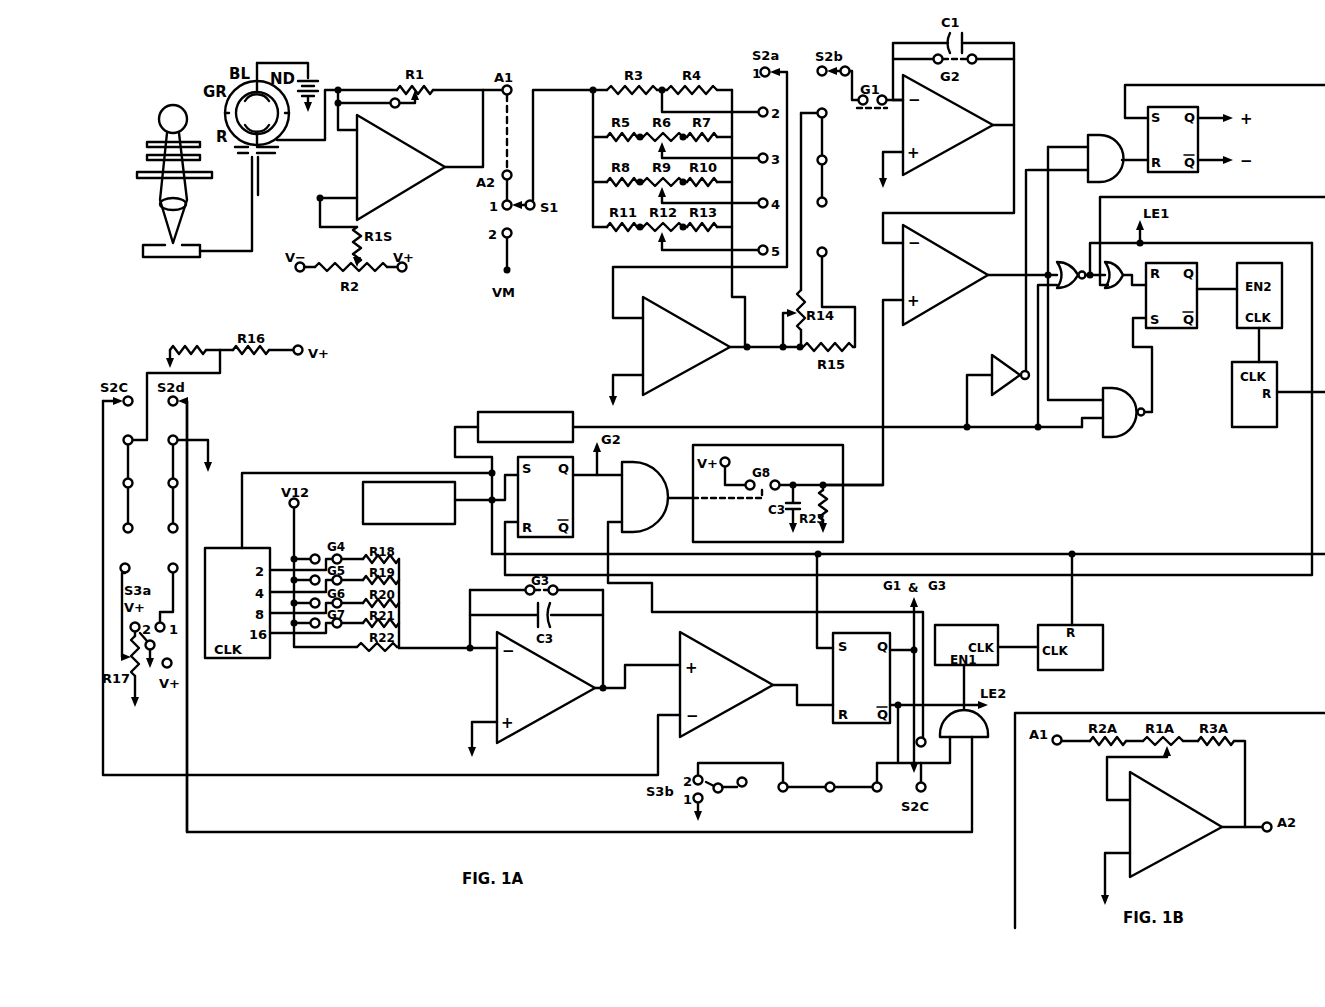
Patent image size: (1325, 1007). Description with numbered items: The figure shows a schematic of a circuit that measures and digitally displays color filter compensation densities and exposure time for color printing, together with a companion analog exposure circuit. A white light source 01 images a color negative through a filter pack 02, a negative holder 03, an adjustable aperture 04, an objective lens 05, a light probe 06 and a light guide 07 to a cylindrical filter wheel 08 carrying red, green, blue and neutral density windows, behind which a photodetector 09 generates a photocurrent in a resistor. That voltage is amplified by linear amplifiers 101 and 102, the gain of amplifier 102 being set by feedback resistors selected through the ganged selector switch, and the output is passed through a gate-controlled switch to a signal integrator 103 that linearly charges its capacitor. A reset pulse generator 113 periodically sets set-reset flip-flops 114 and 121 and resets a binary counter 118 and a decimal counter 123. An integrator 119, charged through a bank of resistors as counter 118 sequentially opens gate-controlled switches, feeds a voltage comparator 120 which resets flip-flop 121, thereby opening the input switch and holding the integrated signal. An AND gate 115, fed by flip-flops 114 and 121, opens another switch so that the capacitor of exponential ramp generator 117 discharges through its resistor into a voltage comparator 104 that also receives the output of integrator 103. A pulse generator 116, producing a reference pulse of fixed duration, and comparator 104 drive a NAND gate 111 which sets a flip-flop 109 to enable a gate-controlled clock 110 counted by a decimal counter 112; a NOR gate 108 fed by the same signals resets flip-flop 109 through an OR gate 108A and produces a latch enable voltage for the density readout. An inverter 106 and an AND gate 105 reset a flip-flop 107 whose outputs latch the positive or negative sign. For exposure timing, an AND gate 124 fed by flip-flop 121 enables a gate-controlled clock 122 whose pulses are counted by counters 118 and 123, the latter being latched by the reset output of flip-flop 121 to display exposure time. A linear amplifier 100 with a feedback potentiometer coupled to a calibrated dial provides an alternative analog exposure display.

In FIG. 1A, the white light source 01 is at (148, 119).
In FIG. 1A, the filter pack 02 is at (154, 145).
In FIG. 1A, the negative holder 03 is at (154, 159).
In FIG. 1A, the adjustable aperture 04 is at (160, 178).
In FIG. 1A, the objective lens 05 is at (148, 188).
In FIG. 1A, the light probe 06 is at (180, 209).
In FIG. 1A, the light guide 07 is at (258, 179).
In FIG. 1A, the cylindrical filter wheel 08 is at (307, 101).
In FIG. 1A, the photodetector 09 is at (257, 104).
In FIG. 1B, the linear amplifier 100 is at (1186, 838).
In FIG. 1A, the linear amplifier 101 is at (400, 158).
In FIG. 1A, the linear amplifier 102 is at (706, 351).
In FIG. 1A, the signal integrator 103 is at (946, 131).
In FIG. 1A, the voltage comparator 104 is at (940, 355).
In FIG. 1A, the AND gate 105 is at (1088, 158).
In FIG. 1A, the inverter 106 is at (997, 393).
In FIG. 1A, the set-reset flip-flop 107 is at (1225, 128).
In FIG. 1A, the NOR gate 108 is at (1182, 265).
In FIG. 1A, the OR gate 108A is at (1212, 242).
In FIG. 1A, the set-reset flip-flop 109 is at (1185, 337).
In FIG. 1A, the gate-controlled clock 110 is at (1259, 312).
In FIG. 1A, the NAND gate 111 is at (1113, 412).
In FIG. 1A, the decimal counter 112 is at (1278, 394).
In FIG. 1A, the reset pulse generator 113 is at (440, 499).
In FIG. 1A, the set-reset flip-flop 114 is at (908, 409).
In FIG. 1A, the AND gate 115 is at (765, 600).
In FIG. 1A, the pulse generator 116 is at (514, 483).
In FIG. 1A, the exponential ramp generator 117 is at (788, 493).
In FIG. 1A, the binary counter 118 is at (269, 603).
In FIG. 1A, the integrator 119 is at (539, 673).
In FIG. 1A, the voltage comparator 120 is at (468, 588).
In FIG. 1A, the set-reset flip-flop 121 is at (902, 658).
In FIG. 1A, the gate-controlled clock 122 is at (986, 645).
In FIG. 1A, the decimal counter 123 is at (1070, 612).
In FIG. 1A, the AND gate 124 is at (587, 616).